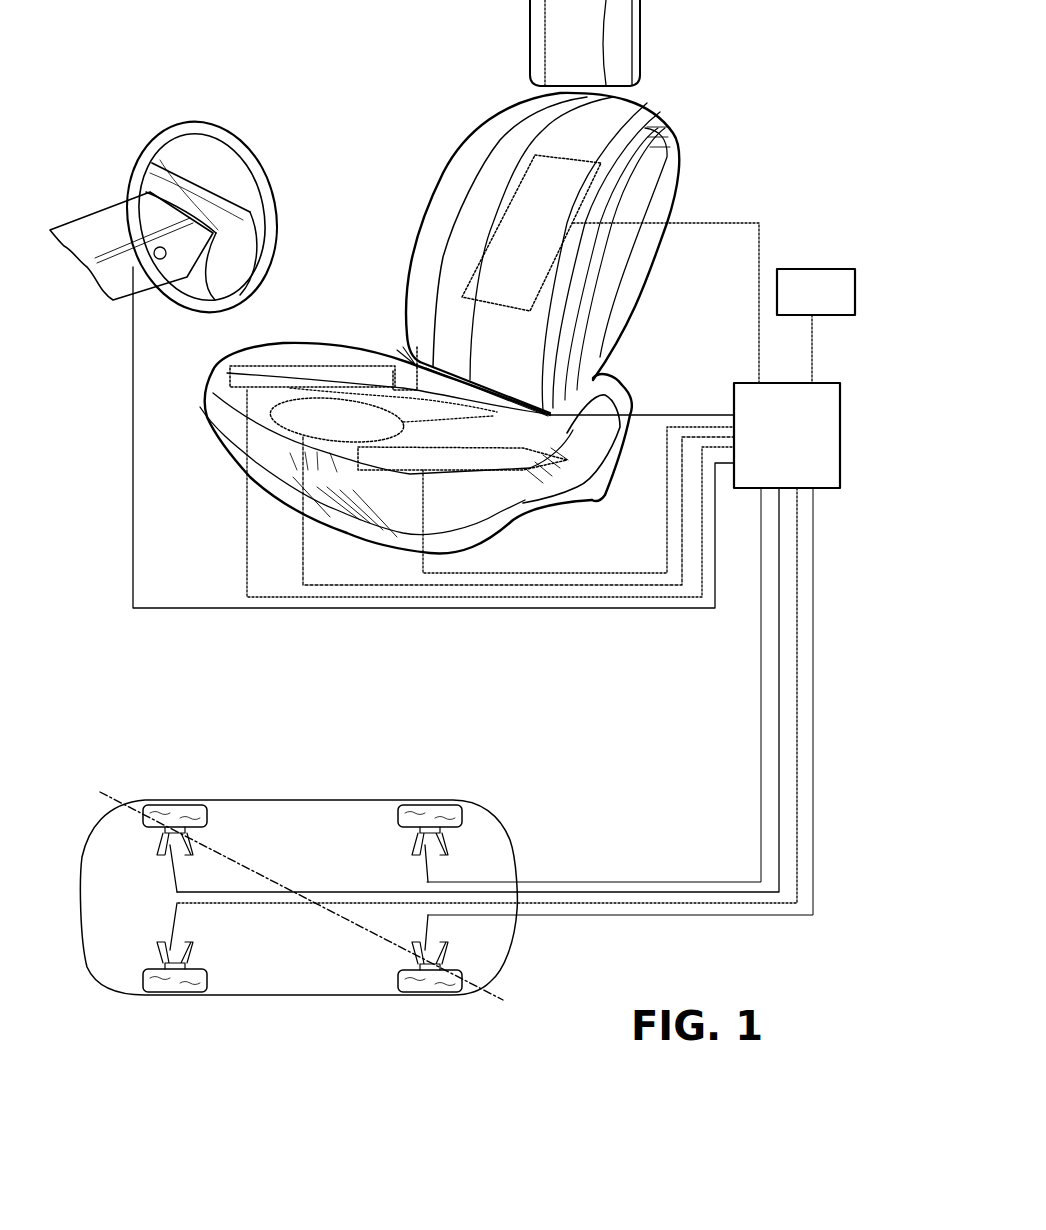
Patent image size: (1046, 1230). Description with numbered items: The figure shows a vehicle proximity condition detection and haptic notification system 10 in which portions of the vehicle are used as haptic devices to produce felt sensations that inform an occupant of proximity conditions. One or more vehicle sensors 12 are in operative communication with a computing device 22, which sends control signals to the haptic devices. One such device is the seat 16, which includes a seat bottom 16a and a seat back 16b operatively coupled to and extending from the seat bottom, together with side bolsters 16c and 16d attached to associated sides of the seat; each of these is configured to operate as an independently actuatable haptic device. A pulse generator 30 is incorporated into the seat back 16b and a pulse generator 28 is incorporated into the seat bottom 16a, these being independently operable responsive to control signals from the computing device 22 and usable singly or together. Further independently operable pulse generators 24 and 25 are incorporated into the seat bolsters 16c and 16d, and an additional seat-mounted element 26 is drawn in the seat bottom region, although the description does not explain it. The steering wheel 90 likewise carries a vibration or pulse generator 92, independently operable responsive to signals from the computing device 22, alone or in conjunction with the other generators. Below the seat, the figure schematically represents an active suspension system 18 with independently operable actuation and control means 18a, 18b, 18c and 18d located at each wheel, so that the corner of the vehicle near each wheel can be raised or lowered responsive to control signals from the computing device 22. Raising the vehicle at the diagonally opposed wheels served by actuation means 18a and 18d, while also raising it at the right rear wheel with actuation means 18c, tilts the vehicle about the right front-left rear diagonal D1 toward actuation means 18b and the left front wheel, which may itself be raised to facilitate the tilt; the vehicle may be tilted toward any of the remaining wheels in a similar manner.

The vehicle proximity condition detection and haptic notification system 10 is at (287, 99).
The steering wheel 90 is at (217, 147).
The vibration or pulse generator 92 is at (157, 247).
The seat 16 is at (433, 210).
The seat bottom 16a is at (237, 448).
The seat back 16b is at (520, 130).
The side bolster 16c is at (363, 360).
The side bolster 16d is at (483, 440).
The pulse generator 24 is at (283, 366).
The pulse generator 25 is at (567, 460).
The third sensor 26 is at (300, 437).
The pulse generator 28 is at (410, 343).
The pulse generator 30 is at (572, 155).
The vehicle sensors 12 is at (814, 268).
The computing device 22 is at (841, 443).
The active suspension system 18 is at (254, 802).
The actuation and control means 18a is at (167, 832).
The actuation and control means 18b is at (165, 950).
The actuation and control means 18c is at (423, 847).
The actuation and control means 18d is at (420, 952).
The right front-left rear diagonal D1 is at (118, 792).